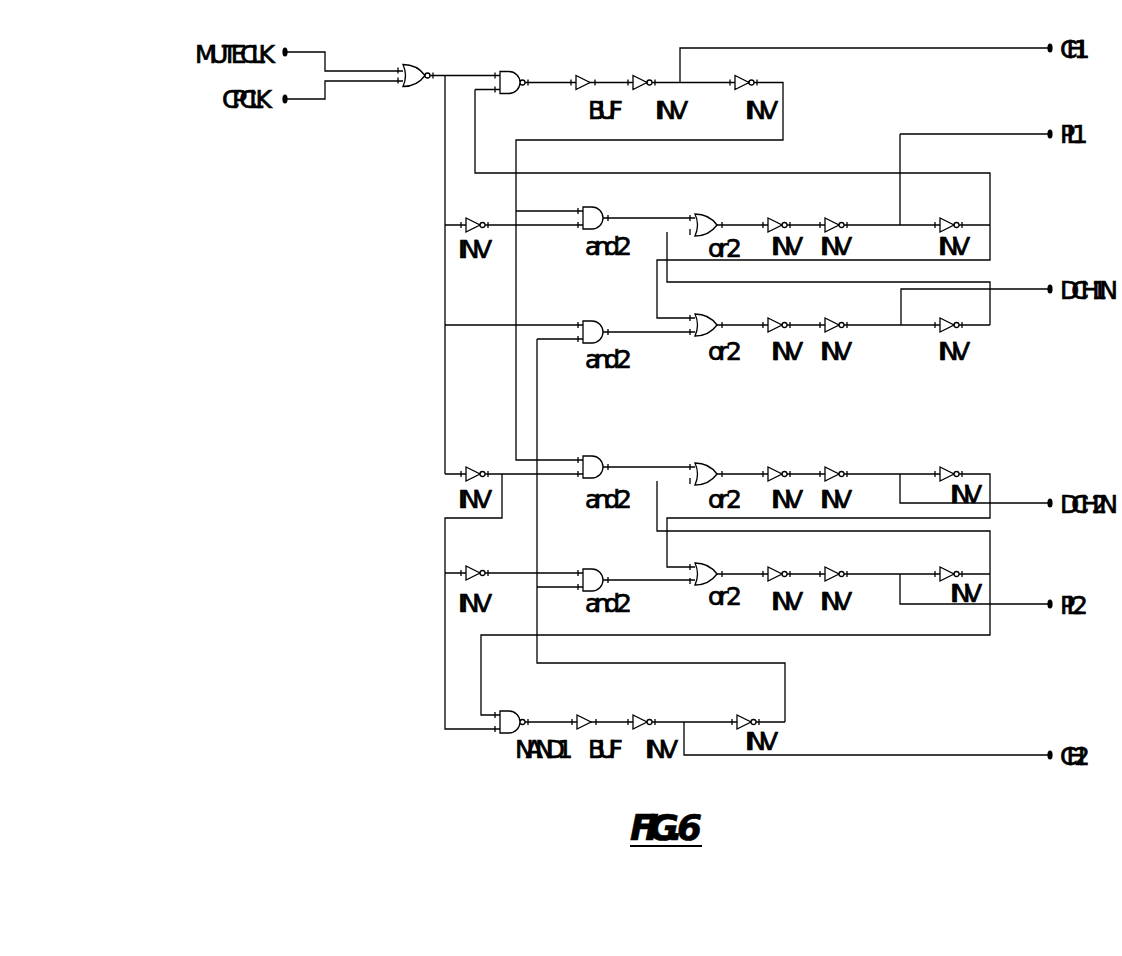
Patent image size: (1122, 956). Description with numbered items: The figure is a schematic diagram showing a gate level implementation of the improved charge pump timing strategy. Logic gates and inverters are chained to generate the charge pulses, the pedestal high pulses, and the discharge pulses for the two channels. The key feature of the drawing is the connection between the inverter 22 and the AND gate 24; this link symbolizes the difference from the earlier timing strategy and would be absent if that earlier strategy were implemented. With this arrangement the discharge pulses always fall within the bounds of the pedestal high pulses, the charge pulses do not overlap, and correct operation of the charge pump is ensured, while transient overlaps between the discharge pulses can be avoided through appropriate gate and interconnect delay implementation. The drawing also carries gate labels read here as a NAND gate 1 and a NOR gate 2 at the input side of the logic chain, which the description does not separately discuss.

The NAND1 gate 1 is at (534, 99).
The NOR2 gate 2 is at (409, 95).
The inverter 22 is at (748, 77).
The AND gate 24 is at (598, 458).